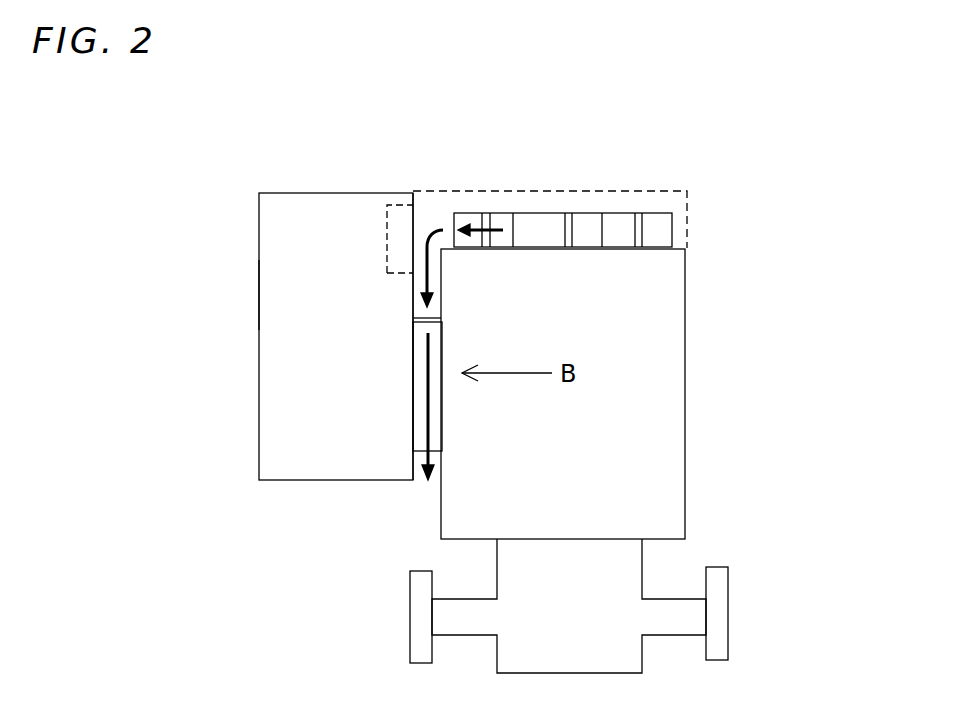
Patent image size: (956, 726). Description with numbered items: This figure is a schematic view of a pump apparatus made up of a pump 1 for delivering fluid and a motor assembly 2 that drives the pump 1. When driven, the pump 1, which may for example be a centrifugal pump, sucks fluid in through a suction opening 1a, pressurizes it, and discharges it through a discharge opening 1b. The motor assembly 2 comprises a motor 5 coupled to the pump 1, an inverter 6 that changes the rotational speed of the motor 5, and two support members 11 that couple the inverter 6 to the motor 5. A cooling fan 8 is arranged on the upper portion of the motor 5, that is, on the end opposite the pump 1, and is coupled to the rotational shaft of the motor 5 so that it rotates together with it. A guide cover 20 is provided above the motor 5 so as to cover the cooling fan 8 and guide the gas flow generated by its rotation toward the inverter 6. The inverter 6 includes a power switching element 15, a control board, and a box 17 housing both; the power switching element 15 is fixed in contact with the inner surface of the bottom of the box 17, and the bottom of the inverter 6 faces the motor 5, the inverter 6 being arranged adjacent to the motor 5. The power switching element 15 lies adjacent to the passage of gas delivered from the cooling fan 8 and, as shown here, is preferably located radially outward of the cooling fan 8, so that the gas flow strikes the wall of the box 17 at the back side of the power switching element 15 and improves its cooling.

The pump 1 is at (740, 572).
The suction opening 1a is at (410, 617).
The discharge opening 1b is at (728, 613).
The motor assembly 2 is at (725, 270).
The motor 5 is at (685, 350).
The inverter 6 is at (259, 262).
The cooling fan 8 is at (553, 213).
The support members 11 is at (420, 432).
The power switching element 15 is at (385, 232).
The box 17 is at (259, 293).
The guide cover 20 is at (498, 190).